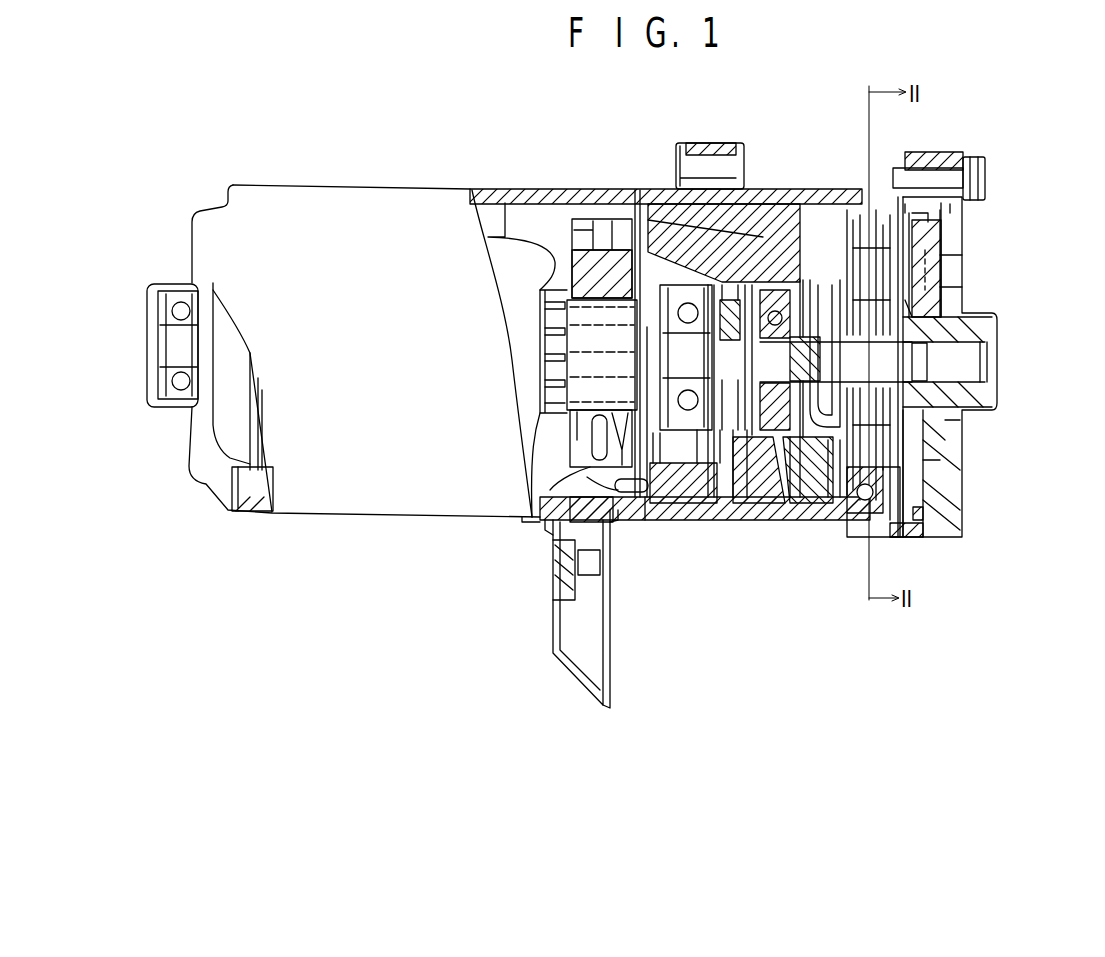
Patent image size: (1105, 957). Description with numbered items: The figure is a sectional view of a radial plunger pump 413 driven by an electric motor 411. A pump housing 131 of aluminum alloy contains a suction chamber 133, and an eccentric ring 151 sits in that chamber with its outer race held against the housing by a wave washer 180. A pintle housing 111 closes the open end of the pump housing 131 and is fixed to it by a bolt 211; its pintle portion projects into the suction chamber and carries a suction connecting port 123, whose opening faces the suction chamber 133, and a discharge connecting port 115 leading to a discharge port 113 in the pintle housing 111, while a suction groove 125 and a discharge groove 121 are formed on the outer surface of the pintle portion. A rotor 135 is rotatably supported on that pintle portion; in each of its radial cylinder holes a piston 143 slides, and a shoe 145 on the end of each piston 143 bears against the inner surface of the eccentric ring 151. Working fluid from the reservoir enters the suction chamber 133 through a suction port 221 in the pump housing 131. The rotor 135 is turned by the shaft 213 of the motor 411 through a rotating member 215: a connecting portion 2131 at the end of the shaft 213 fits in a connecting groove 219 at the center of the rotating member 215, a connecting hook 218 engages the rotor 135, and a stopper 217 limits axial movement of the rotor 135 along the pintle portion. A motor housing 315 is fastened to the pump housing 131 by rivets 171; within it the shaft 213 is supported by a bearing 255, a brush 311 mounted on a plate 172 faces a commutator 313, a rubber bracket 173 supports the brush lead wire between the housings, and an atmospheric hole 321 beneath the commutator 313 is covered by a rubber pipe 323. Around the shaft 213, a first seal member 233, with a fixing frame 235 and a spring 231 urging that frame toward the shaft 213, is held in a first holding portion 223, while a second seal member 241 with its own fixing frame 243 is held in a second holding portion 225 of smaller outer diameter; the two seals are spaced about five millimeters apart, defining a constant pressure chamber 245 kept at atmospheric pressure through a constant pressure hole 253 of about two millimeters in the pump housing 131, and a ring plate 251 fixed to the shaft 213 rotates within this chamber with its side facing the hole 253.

The pintle housing 111 is at (983, 410).
The discharge port 113 is at (998, 377).
The discharge connecting port 115 is at (965, 430).
The discharge groove 121 is at (935, 460).
The suction connecting port 123 is at (1000, 343).
The suction groove 125 is at (965, 293).
The pump housing 131 is at (897, 527).
The suction chamber 133 is at (962, 517).
The rotor 135 is at (836, 500).
The piston 143 is at (875, 273).
The shoe 145 is at (963, 250).
The eccentric ring 151 is at (843, 520).
The rivets 171 is at (680, 182).
The plate 172 is at (531, 520).
The bracket 173 is at (642, 520).
The wave washer 180 is at (895, 255).
The bolt 211 is at (975, 164).
The shaft 213 is at (748, 490).
The rotating member 215 is at (790, 300).
The stopper 217 is at (828, 300).
The connecting hook 218 is at (947, 493).
The connecting groove 219 is at (817, 383).
The suction port 221 is at (815, 290).
The first holding portion 223 is at (788, 520).
The second holding portion 225 is at (718, 462).
The spring 231 is at (775, 300).
The first seal member 233 is at (740, 300).
The fixing frame 235 is at (800, 495).
The second seal member 241 is at (735, 470).
The fixing frame 243 is at (697, 480).
The constant pressure chamber 245 is at (712, 280).
The ring plate 251 is at (677, 197).
The constant pressure hole 253 is at (758, 520).
The bearing 255 is at (183, 288).
The brush 311 is at (590, 240).
The commutator 313 is at (583, 330).
The motor housing 315 is at (322, 184).
The atmospheric hole 321 is at (552, 556).
The pipe 323 is at (613, 628).
The motor 411 is at (228, 430).
The pump 413 is at (954, 144).
The connecting portion 2131 is at (963, 287).